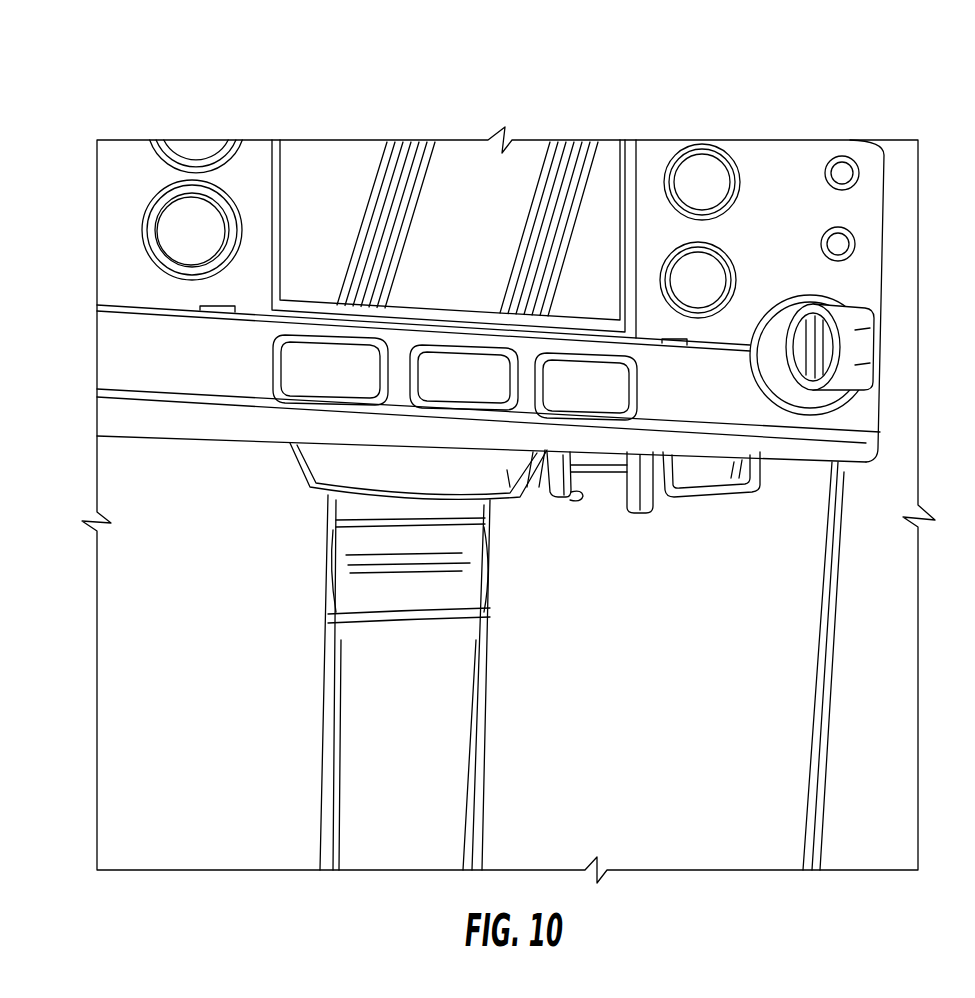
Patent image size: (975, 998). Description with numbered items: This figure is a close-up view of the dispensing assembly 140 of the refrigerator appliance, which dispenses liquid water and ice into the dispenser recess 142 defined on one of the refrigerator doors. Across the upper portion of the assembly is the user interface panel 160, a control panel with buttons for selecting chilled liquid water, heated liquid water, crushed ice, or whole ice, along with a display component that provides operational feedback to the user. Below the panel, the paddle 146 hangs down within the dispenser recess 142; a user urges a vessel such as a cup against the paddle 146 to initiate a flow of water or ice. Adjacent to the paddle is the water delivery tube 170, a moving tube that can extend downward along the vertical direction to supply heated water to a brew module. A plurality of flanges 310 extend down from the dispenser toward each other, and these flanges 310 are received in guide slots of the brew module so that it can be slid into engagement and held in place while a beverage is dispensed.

The dispensing assembly 140 is at (136, 101).
The dispenser recess 142 is at (142, 712).
The paddle 146 is at (360, 830).
The user interface panel 160 is at (332, 170).
The water delivery tube 170 is at (633, 497).
The flanges 310 is at (565, 497).